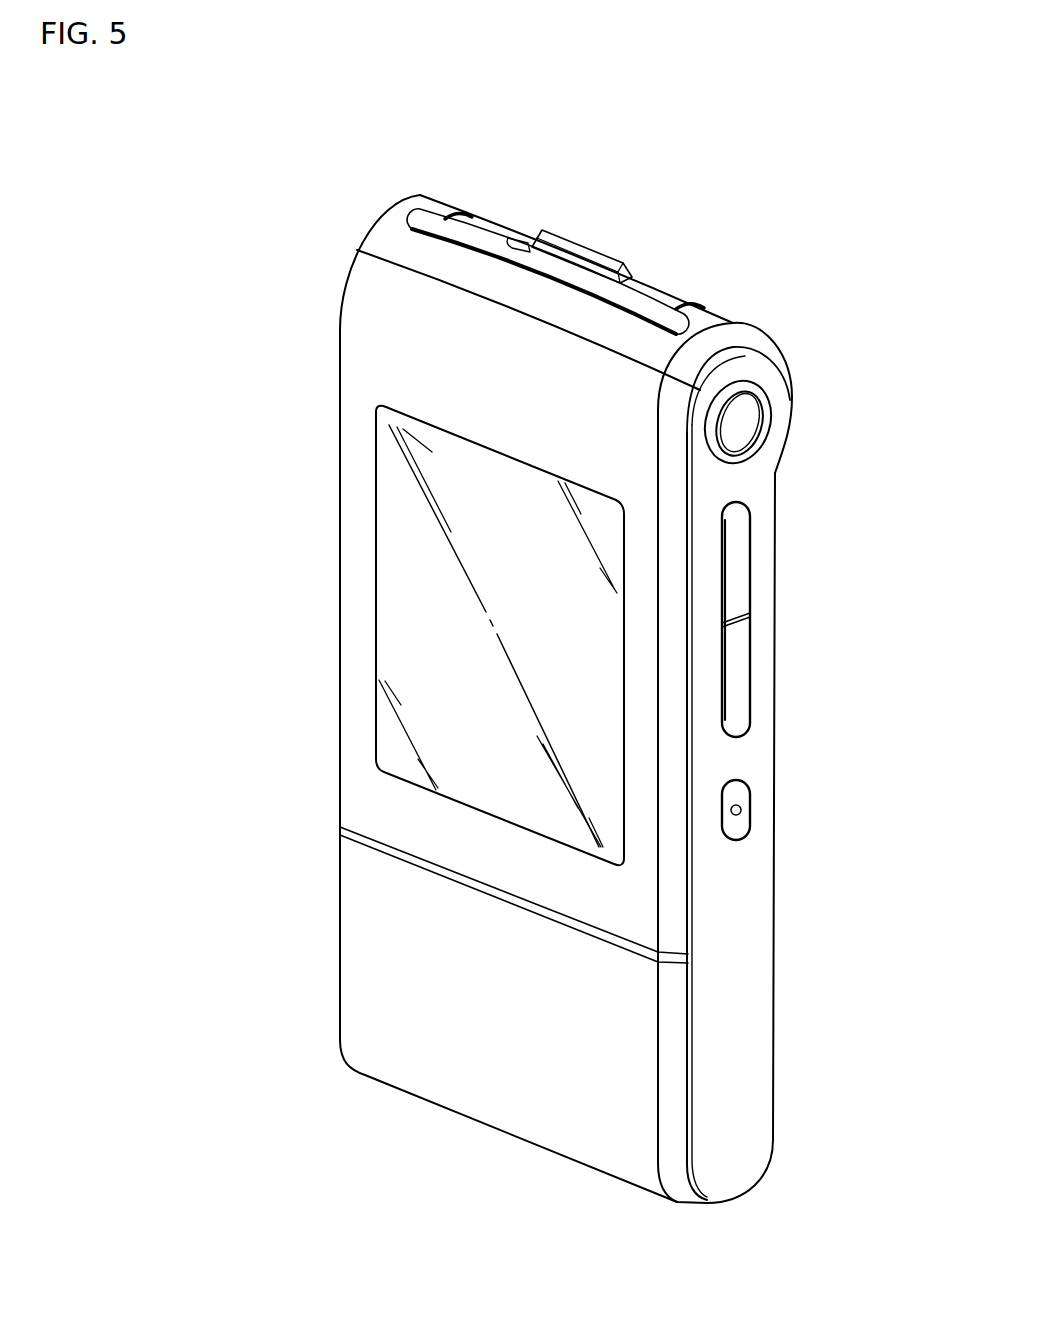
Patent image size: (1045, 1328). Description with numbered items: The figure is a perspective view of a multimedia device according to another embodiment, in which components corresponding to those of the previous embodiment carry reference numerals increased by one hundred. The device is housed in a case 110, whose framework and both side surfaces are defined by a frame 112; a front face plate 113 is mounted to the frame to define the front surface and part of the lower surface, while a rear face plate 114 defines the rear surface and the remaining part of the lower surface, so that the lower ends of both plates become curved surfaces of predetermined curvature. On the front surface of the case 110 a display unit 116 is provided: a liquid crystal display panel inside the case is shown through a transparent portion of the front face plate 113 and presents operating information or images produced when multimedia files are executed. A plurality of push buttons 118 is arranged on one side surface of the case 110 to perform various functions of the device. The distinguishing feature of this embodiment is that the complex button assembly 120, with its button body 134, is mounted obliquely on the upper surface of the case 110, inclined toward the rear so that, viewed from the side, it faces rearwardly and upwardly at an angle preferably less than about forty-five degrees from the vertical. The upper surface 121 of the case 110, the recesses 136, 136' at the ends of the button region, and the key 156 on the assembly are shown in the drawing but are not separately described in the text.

The case 110 is at (274, 700).
The frame 112 is at (740, 1138).
The front face plate 113 is at (467, 1078).
The rear face plate 114 is at (775, 893).
The display unit 116 is at (393, 554).
The push buttons 118 is at (740, 565).
The complex button assembly 120 is at (778, 277).
The top surface of body 121 is at (383, 228).
The button body 134 is at (655, 290).
The groove end recess 136 is at (485, 179).
The groove end recess 136' is at (725, 267).
The key 156 is at (596, 238).